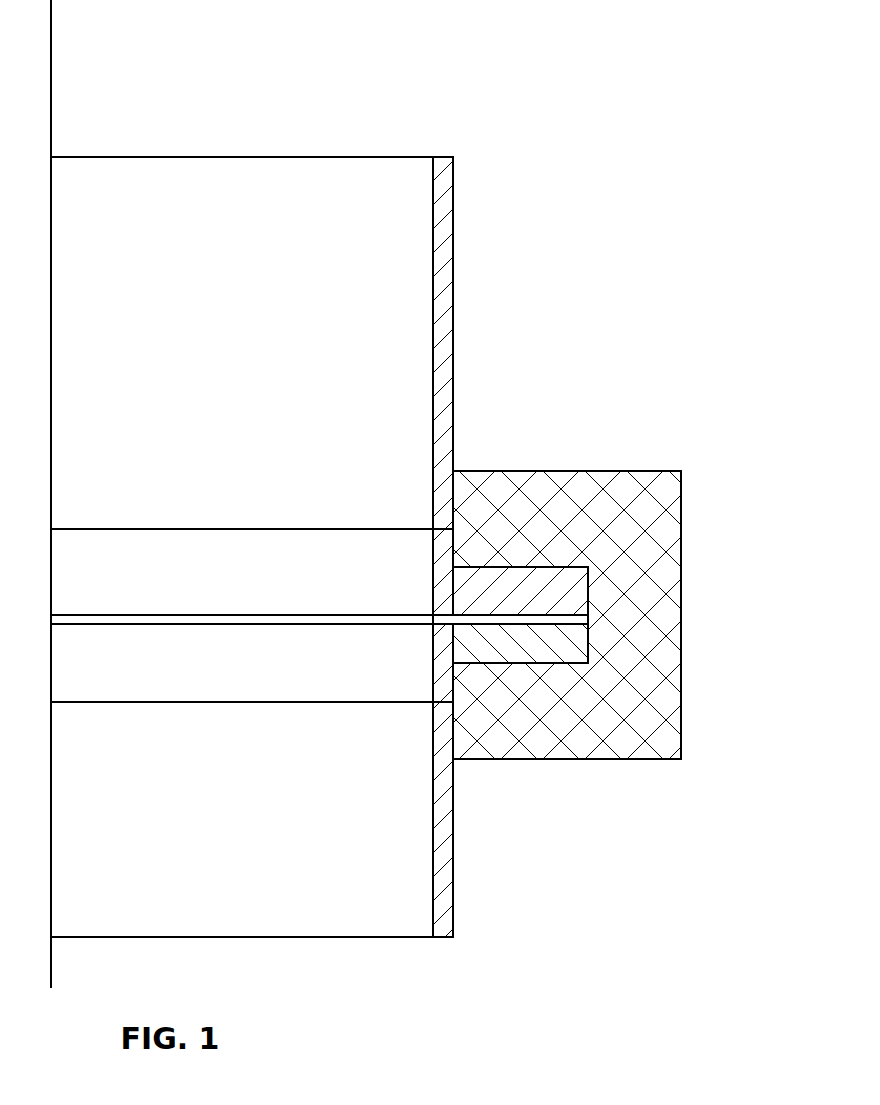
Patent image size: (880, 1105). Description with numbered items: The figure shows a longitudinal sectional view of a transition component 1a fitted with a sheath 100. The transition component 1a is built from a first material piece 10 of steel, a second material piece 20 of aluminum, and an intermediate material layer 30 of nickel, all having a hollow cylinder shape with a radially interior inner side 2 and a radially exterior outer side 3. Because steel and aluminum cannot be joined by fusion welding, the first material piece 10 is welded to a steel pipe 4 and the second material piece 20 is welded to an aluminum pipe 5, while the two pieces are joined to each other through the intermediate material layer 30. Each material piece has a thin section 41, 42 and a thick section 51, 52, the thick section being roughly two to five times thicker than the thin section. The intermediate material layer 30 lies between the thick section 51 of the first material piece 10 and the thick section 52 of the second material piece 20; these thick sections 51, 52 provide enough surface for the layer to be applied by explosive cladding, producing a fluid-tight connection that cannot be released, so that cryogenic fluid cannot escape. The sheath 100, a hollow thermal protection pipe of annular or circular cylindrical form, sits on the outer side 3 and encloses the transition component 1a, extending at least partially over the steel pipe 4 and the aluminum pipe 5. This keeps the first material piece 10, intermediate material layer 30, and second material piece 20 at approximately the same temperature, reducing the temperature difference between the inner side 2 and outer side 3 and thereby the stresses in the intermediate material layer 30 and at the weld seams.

The transition component 1a is at (465, 564).
The sheath 100 is at (626, 507).
The inner side 2 is at (433, 543).
The outer side 3 is at (455, 539).
The steel pipe 4 is at (440, 801).
The aluminum pipe 5 is at (445, 197).
The first material piece 10 is at (482, 641).
The second material piece 20 is at (445, 611).
The intermediate material layer 30 is at (438, 622).
The thin section 41 is at (442, 556).
The thin section 42 is at (440, 686).
The thick section 51 is at (580, 603).
The thick section 52 is at (567, 653).